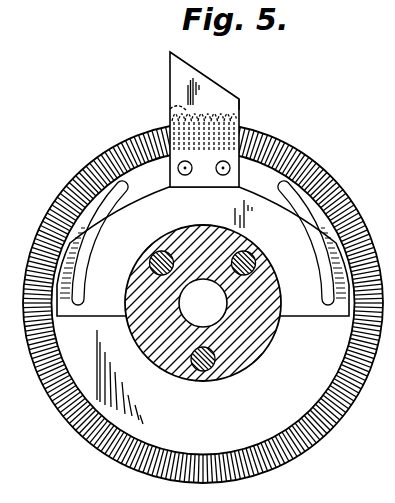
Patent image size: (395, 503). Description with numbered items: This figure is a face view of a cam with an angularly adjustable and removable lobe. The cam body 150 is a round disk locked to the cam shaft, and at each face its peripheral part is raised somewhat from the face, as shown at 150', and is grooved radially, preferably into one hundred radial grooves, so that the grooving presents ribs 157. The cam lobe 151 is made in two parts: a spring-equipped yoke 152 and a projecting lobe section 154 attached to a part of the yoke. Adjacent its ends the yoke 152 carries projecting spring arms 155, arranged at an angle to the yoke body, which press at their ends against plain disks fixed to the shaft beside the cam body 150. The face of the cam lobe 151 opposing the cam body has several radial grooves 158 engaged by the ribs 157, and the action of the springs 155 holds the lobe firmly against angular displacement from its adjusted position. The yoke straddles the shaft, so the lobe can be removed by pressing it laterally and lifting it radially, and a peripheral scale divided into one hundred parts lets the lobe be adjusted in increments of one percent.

The cam body 150 is at (189, 303).
The raised peripheral part of cam body 150' is at (203, 303).
The cam lobe 151 is at (219, 82).
The spring-equipped yoke 152 is at (173, 221).
The projecting lobe section 154 is at (226, 100).
The projecting spring arms 155 is at (97, 213).
The ribs 157 is at (82, 174).
The radial grooves 158 is at (172, 107).